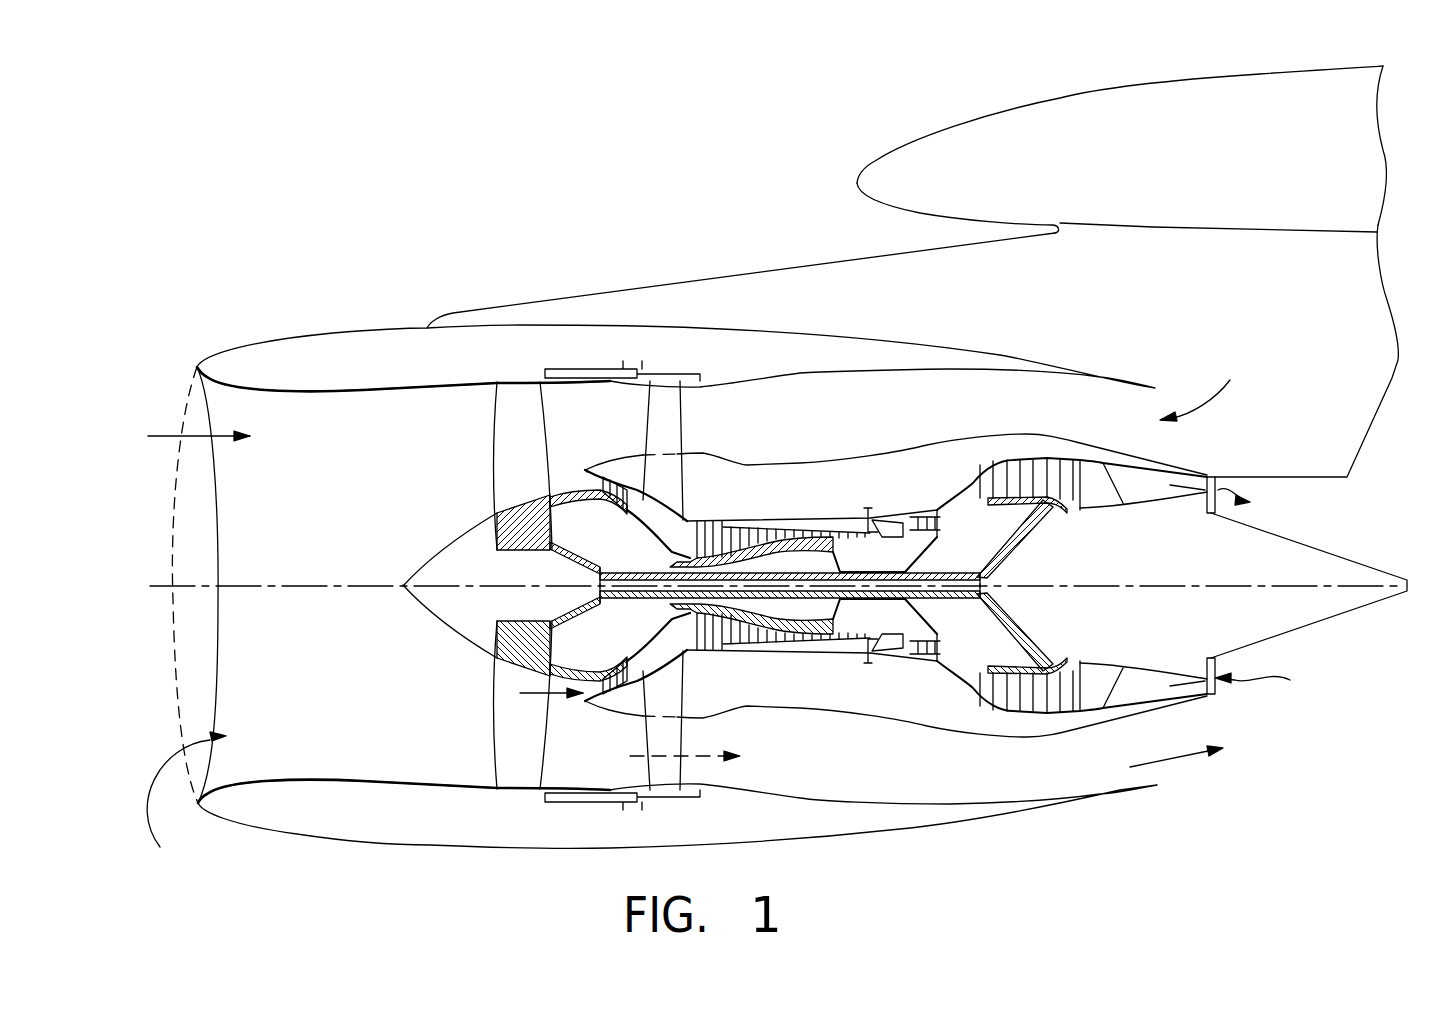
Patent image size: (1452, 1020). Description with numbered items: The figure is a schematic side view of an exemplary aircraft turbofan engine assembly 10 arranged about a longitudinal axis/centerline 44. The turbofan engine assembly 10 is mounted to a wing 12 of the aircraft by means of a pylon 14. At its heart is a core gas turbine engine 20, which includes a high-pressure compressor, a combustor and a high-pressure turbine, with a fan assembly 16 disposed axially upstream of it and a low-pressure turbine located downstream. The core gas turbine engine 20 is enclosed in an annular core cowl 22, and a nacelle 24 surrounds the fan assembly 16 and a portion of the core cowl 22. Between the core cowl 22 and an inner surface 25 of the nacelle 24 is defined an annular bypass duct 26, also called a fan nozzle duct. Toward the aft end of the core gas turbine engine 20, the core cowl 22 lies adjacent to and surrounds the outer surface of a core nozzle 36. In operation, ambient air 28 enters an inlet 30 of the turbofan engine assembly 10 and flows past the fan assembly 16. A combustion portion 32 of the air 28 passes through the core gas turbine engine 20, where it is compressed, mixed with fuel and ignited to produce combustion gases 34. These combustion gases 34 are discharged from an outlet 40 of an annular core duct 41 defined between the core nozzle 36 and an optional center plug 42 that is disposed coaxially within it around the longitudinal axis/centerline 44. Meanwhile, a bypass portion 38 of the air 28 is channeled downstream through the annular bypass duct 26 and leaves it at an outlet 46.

The turbofan engine assembly 10 is at (1045, 308).
The wing 12 is at (893, 147).
The pylon 14 is at (1390, 400).
The fan assembly 16 is at (498, 477).
The core gas turbine engine 20 is at (625, 652).
The core cowl 22 is at (712, 452).
The nacelle 24 is at (336, 333).
The inner surface 25 is at (575, 386).
The bypass duct 26 is at (881, 424).
The ambient air 28 is at (157, 438).
The inlet 30 is at (186, 800).
The combustion portion 32 is at (538, 695).
The combustion gases 34 is at (1258, 496).
The core nozzle 36 is at (1172, 705).
The bypass portion 38 is at (693, 753).
The outlet 40 is at (1274, 683).
The core duct 41 is at (1153, 702).
The center plug 42 is at (1190, 564).
The longitudinal axis/centerline 44 is at (1262, 585).
The outlet 46 is at (1212, 391).